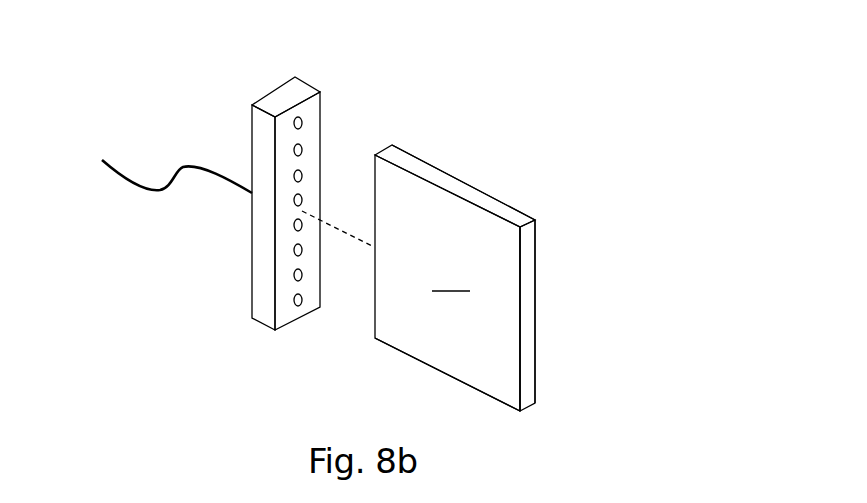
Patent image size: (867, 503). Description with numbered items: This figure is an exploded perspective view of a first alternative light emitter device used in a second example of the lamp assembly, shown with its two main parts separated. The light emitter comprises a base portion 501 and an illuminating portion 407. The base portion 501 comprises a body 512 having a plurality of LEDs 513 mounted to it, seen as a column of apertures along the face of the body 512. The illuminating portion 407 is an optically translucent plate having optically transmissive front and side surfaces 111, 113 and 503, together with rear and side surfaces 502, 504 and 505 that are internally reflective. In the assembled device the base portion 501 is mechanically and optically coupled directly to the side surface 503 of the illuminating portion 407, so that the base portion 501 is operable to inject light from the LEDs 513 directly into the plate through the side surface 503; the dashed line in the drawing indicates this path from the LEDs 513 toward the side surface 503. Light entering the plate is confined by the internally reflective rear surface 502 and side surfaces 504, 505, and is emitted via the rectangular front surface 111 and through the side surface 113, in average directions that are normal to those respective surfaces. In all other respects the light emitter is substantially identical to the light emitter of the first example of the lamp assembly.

The base portion 501 is at (340, 54).
The LEDs 513 is at (302, 122).
The body 512 is at (260, 230).
The side surface 503 is at (366, 258).
The illuminating portion 407 is at (534, 153).
The front surface 111 is at (451, 281).
The side surface 504 is at (460, 185).
The rear surface 502 is at (541, 285).
The side surface 505 is at (446, 385).
The side surface 113 is at (527, 358).